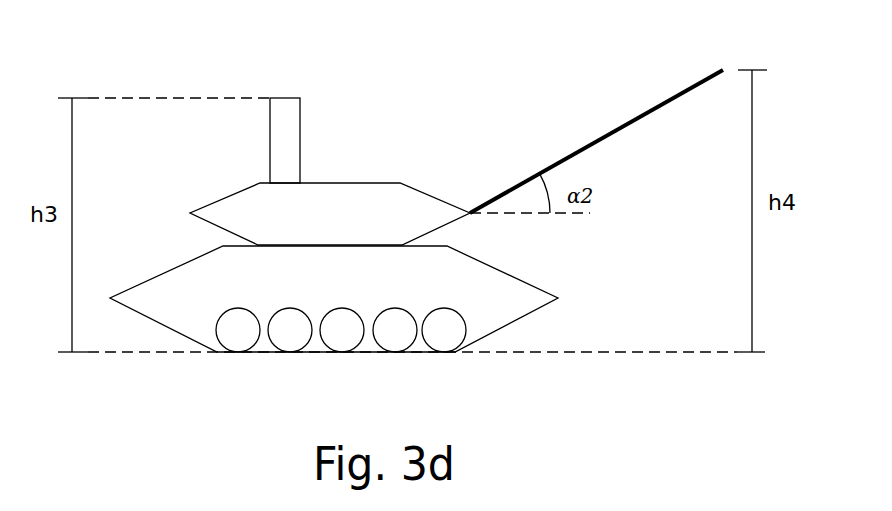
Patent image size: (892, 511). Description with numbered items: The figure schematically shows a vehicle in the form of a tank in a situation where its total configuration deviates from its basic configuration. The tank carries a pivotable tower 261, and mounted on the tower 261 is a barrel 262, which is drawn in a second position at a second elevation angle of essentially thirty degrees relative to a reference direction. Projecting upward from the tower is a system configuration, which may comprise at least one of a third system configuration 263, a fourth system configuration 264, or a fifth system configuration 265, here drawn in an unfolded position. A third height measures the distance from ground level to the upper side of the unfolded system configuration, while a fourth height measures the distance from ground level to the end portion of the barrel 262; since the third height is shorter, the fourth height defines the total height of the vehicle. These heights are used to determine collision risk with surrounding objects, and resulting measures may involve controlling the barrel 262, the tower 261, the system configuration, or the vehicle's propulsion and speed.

The pivotable tower 261 is at (190, 213).
The barrel 262 is at (657, 107).
The third system configuration 263 is at (384, 140).
The fourth system configuration 264 is at (285, 140).
The fifth system configuration 265 is at (300, 122).